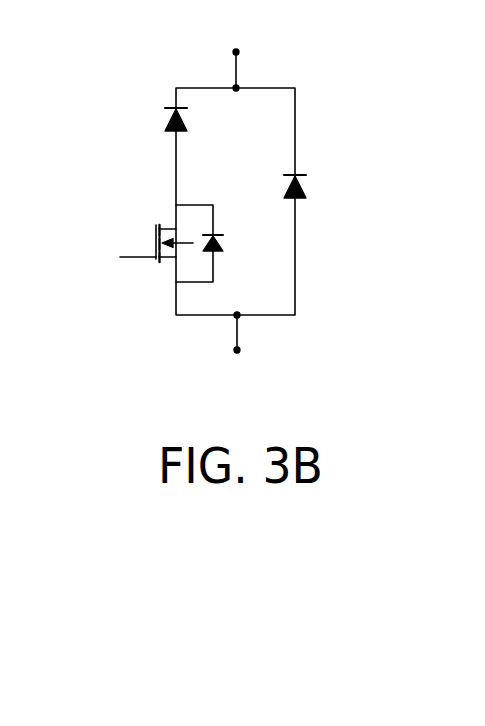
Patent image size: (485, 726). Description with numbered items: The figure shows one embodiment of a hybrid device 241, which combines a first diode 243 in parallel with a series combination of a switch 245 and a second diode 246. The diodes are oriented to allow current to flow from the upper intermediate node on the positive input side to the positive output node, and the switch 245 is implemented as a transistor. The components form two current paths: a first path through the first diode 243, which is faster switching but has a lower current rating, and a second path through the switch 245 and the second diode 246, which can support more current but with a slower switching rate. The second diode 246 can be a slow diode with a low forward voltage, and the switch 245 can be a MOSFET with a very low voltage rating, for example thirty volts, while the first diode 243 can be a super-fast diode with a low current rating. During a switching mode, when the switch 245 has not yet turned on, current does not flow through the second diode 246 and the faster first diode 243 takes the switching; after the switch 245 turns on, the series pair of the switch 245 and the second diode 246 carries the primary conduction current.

The hybrid device H1 241 is at (165, 60).
The diode D3 246 is at (170, 131).
The diode D1 243 is at (302, 190).
The switch Q3 245 is at (157, 232).